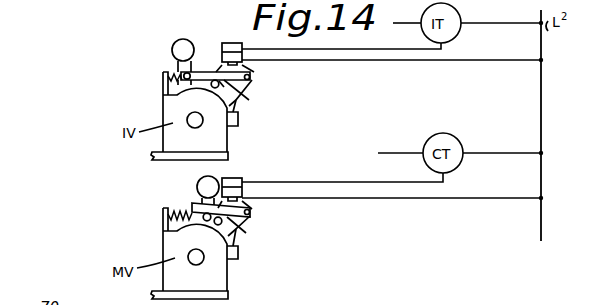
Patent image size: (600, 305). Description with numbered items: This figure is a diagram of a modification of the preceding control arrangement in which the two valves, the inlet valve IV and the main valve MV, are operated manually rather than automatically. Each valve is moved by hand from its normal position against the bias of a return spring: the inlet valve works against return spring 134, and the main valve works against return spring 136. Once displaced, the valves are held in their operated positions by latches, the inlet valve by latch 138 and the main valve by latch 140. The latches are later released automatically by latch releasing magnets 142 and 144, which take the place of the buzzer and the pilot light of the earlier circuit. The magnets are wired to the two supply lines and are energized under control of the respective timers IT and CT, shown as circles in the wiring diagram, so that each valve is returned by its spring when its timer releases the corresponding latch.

The return spring 134 is at (172, 71).
The return spring 136 is at (178, 210).
The latch 138 is at (243, 90).
The latch 140 is at (243, 227).
The latch releasing magnet 142 is at (230, 178).
The latch releasing magnet 144 is at (238, 30).